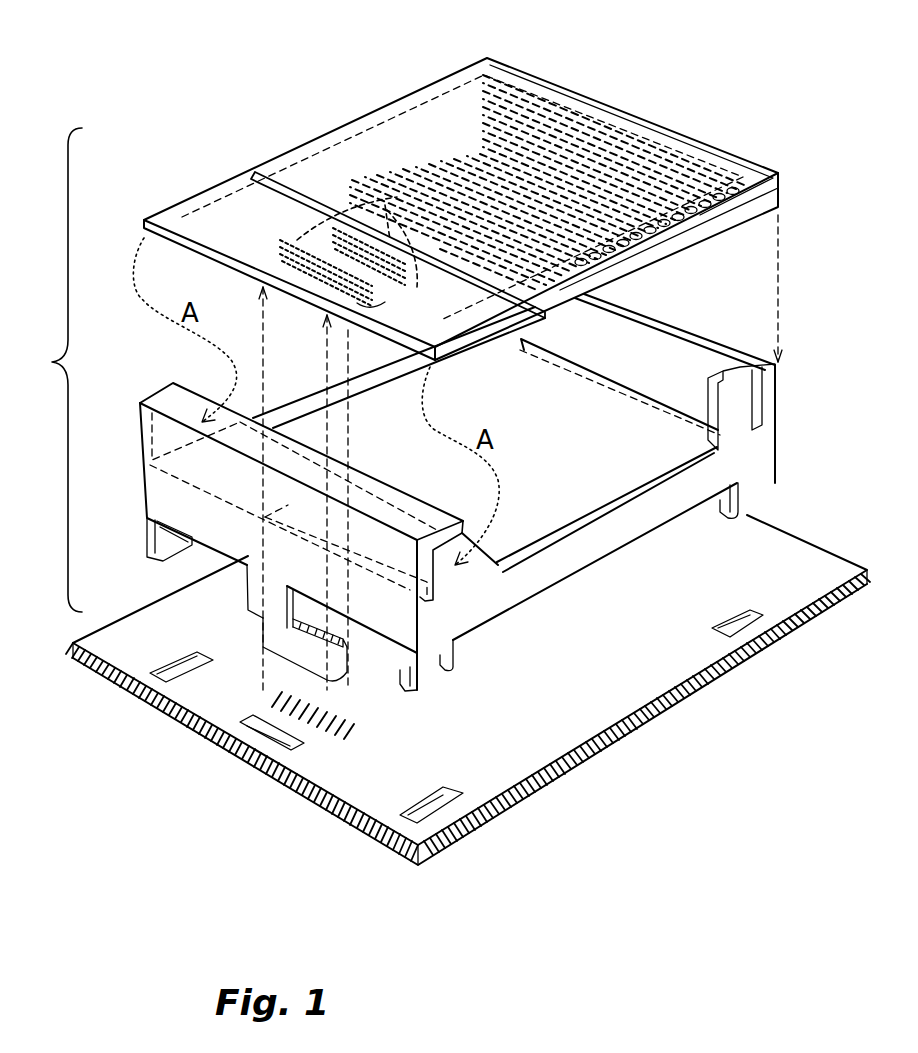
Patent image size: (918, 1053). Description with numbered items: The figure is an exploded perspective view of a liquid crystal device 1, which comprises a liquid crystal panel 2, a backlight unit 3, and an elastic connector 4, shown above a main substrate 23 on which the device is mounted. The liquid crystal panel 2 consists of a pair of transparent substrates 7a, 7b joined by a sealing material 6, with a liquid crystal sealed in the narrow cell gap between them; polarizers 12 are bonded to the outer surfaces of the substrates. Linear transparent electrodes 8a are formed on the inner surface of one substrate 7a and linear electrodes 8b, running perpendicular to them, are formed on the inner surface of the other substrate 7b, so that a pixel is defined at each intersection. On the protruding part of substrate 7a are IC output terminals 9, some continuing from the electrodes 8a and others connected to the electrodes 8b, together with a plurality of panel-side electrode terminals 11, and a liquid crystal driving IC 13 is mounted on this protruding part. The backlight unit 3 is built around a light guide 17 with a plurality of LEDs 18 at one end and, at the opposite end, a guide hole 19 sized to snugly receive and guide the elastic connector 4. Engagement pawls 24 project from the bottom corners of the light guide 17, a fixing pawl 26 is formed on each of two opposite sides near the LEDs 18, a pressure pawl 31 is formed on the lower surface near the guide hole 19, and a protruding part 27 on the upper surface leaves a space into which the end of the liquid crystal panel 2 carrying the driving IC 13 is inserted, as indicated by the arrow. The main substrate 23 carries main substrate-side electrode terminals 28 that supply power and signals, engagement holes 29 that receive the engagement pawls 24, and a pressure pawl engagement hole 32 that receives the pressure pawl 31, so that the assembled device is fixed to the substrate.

The liquid crystal device 1 is at (56, 370).
The liquid crystal panel 2 is at (493, 185).
The backlight unit 3 is at (464, 495).
The elastic connector 4 is at (340, 663).
The sealing material 6 is at (443, 100).
The substrate 7a is at (783, 173).
The substrate 7b is at (763, 203).
The linear transparent electrodes 8a is at (540, 247).
The linear electrodes 8b is at (523, 113).
The IC output terminals 9 is at (395, 235).
The panel-side electrode terminals 11 is at (280, 267).
The polarizers 12 is at (282, 173).
The liquid crystal driving IC 13 is at (390, 304).
The light guide 17 is at (537, 517).
The LEDs 18 is at (524, 341).
The guide hole 19 is at (317, 527).
The main substrate 23 is at (468, 690).
The engagement pawls 24 is at (760, 482).
The fixing pawl 26 is at (733, 412).
The protruding part 27 is at (173, 393).
The main substrate-side electrode terminals 28 is at (340, 733).
The engagement holes 29 is at (157, 675).
The pressure pawl 31 is at (250, 597).
The pressure pawl engagement hole 32 is at (260, 747).